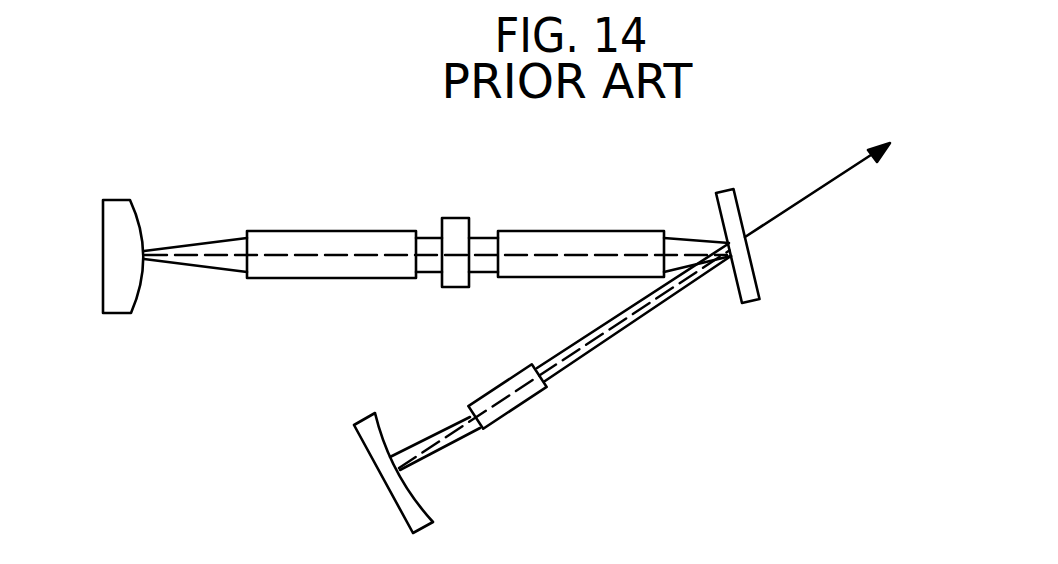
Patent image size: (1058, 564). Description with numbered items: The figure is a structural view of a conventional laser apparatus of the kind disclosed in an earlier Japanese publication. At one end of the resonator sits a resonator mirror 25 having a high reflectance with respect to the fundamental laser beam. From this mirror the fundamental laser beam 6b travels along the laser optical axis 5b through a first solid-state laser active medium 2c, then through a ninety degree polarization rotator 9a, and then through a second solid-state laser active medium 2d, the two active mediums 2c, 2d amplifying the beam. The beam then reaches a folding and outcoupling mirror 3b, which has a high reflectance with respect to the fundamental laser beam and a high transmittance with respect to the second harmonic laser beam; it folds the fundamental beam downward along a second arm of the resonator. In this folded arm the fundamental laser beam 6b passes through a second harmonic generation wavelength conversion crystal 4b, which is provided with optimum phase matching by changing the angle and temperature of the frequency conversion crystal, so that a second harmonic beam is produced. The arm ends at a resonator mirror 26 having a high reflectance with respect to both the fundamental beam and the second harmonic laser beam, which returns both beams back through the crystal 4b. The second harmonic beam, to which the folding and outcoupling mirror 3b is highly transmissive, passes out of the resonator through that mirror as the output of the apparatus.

The resonator mirror 25 is at (115, 313).
The resonator mirror 26 is at (372, 463).
The solid-state laser active medium 2c is at (345, 231).
The solid-state laser active medium 2d is at (595, 230).
The 90 degree polarization rotator 9a is at (453, 218).
The folding and outcoupling mirror 3b is at (752, 302).
The second harmonic generation wavelength conversion crystal 4b is at (517, 412).
The laser optical axis 5b is at (165, 247).
The fundamental laser beam 6b is at (232, 240).